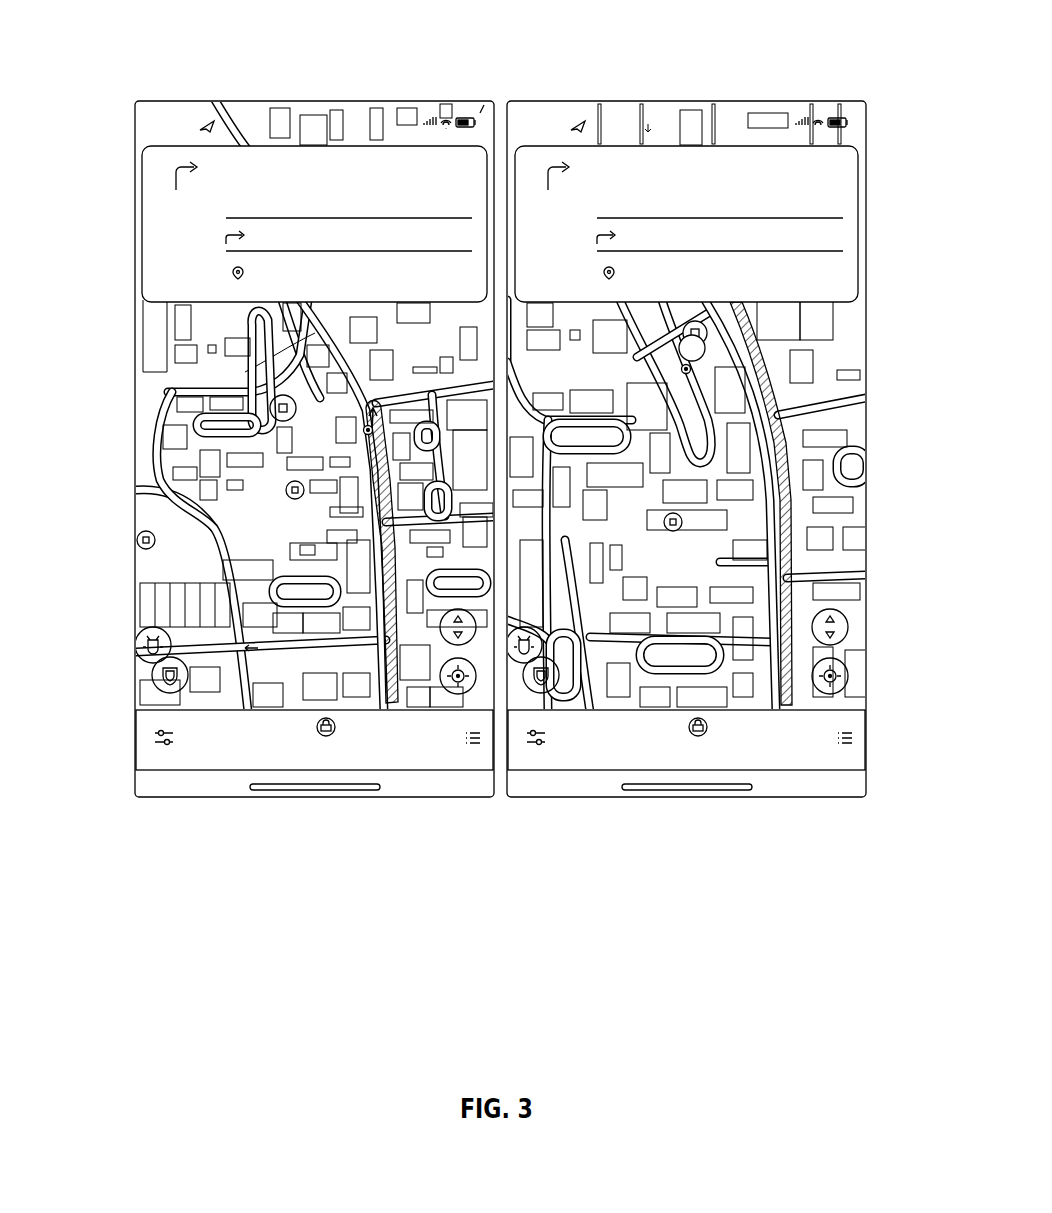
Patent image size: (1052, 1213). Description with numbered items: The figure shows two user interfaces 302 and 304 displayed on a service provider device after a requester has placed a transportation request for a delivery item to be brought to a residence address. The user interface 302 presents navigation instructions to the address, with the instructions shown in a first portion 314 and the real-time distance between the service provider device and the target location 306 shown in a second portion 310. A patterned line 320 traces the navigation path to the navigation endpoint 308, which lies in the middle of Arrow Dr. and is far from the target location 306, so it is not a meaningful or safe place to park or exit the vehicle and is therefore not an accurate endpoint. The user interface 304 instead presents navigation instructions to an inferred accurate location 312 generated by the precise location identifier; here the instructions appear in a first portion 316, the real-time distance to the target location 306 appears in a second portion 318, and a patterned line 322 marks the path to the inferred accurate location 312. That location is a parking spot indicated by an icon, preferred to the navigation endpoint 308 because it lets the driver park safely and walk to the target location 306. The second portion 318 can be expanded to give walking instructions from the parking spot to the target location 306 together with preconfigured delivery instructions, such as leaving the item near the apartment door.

The user interface 302 is at (320, 101).
The user interface 304 is at (722, 101).
The target location 306 is at (286, 490).
The navigation endpoint 308 is at (364, 430).
The second portion 310 is at (136, 724).
The inferred accurate location 312 is at (705, 350).
The first portion 314 is at (142, 190).
The first portion 316 is at (855, 192).
The second portion 318 is at (866, 735).
The patterned line 320 is at (392, 583).
The patterned line 322 is at (782, 398).